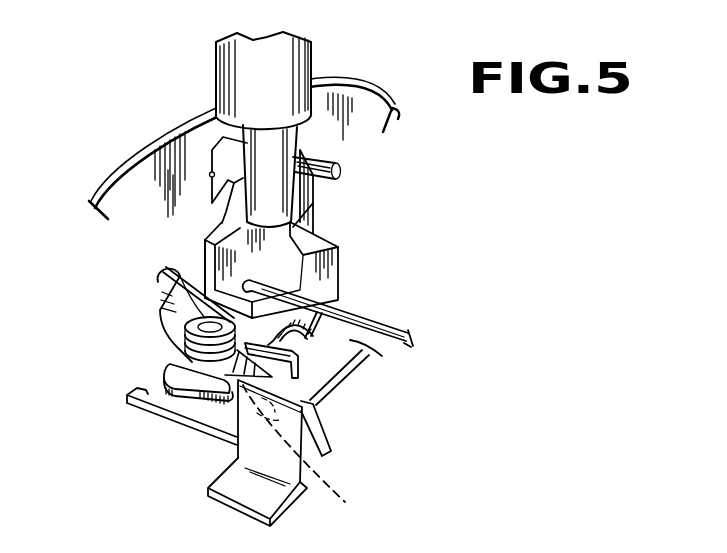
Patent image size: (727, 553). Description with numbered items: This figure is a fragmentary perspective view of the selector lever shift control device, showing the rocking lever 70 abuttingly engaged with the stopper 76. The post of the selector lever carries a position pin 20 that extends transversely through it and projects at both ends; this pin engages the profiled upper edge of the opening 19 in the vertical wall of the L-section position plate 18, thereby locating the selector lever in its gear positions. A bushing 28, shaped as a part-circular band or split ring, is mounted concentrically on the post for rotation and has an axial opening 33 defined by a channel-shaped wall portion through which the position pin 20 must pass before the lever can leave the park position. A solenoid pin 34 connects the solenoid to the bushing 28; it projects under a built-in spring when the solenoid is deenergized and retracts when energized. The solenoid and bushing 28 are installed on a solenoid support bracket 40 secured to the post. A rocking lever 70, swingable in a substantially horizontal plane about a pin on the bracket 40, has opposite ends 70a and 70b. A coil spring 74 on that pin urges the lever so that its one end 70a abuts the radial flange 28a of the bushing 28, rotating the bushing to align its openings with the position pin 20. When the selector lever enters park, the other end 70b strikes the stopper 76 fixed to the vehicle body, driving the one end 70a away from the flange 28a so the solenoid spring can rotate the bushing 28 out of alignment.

The position plate 18 is at (148, 198).
The opening 19 is at (212, 180).
The position pin 20 is at (313, 163).
The bushing 28 is at (237, 227).
The radial flange 28a is at (210, 260).
The axial opening 33 is at (318, 202).
The solenoid pin 34 is at (370, 322).
The solenoid support bracket 40 is at (140, 407).
The rocking lever 70 is at (177, 313).
The one end of the rocking lever 70a is at (140, 280).
The other end of the rocking lever 70b is at (315, 457).
The coil spring 74 is at (205, 360).
The stopper 76 is at (325, 437).